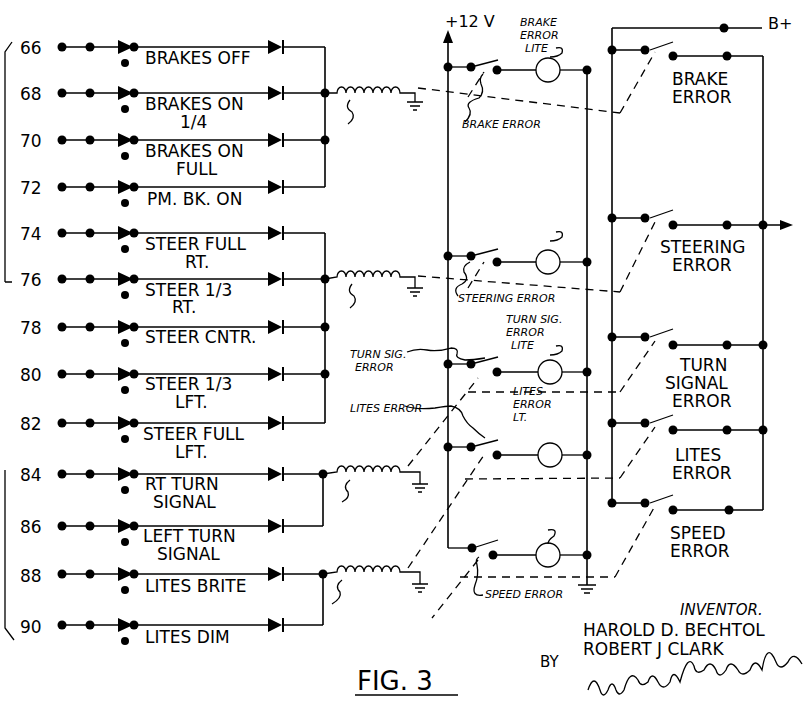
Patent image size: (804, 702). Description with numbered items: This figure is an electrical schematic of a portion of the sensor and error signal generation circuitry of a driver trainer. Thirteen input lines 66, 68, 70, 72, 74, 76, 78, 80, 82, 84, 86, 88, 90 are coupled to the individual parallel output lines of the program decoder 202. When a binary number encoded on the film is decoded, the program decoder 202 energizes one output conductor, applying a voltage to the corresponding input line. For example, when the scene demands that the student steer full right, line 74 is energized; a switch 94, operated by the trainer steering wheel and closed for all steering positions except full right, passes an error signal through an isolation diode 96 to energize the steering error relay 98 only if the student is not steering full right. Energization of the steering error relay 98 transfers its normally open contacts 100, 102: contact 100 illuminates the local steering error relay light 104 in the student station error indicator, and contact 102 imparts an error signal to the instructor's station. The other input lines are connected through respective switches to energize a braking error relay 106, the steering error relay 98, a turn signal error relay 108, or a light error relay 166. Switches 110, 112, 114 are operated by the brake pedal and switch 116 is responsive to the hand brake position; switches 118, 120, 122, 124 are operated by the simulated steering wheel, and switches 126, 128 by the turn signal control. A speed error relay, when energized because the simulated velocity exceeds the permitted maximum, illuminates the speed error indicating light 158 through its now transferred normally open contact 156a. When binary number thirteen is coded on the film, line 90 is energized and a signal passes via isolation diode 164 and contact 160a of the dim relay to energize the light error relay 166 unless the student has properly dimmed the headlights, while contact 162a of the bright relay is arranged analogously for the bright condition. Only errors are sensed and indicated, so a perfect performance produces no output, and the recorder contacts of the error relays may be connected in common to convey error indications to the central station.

The input line 66 is at (192, 47).
The input line 68 is at (192, 93).
The input line 70 is at (192, 140).
The input line 72 is at (192, 187).
The input line 74 is at (192, 233).
The input line 76 is at (192, 279).
The input line 78 is at (192, 327).
The input line 80 is at (192, 374).
The input line 82 is at (192, 423).
The input line 84 is at (191, 474).
The input line 86 is at (191, 526).
The input line 88 is at (191, 574).
The input line 90 is at (191, 625).
The switch 94 is at (118, 230).
The isolation diode 96 is at (286, 229).
The steering error relay 98 is at (350, 274).
The normally open contact 100 is at (486, 252).
The normally open contact 102 is at (656, 212).
The steering error relay light 104 is at (542, 237).
The braking error relay 106 is at (342, 92).
The turn signal error relay 108 is at (350, 470).
The switch 110 is at (122, 46).
The switch 112 is at (122, 90).
The switch 114 is at (121, 135).
The switch 116 is at (121, 183).
The switch 118 is at (120, 276).
The switch 120 is at (122, 323).
The switch 122 is at (122, 370).
The switch 124 is at (122, 418).
The switch 126 is at (120, 470).
The switch 128 is at (120, 521).
The normally open contact 156a is at (472, 539).
The speed error indicating light 158 is at (536, 564).
The contact 160a is at (122, 623).
The contact 162a is at (122, 571).
The isolation diode 164 is at (276, 632).
The light error relay 166 is at (358, 586).
The program decoder 202 is at (9, 341).